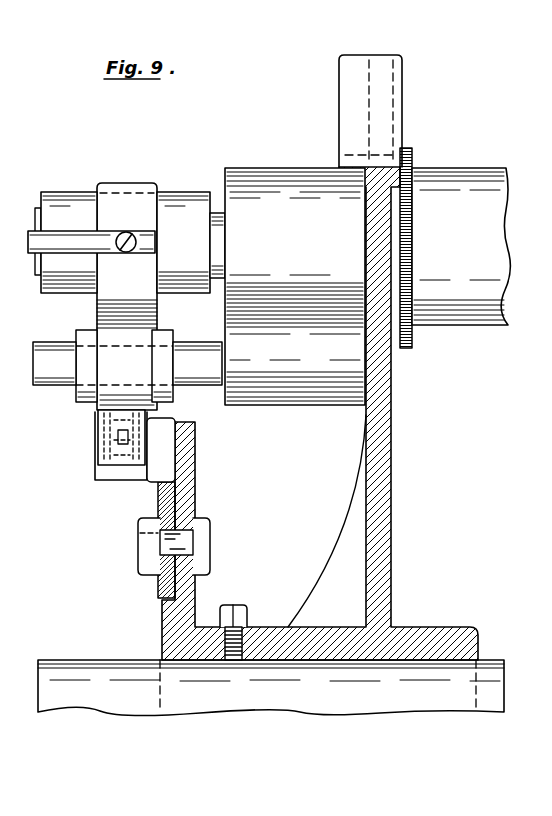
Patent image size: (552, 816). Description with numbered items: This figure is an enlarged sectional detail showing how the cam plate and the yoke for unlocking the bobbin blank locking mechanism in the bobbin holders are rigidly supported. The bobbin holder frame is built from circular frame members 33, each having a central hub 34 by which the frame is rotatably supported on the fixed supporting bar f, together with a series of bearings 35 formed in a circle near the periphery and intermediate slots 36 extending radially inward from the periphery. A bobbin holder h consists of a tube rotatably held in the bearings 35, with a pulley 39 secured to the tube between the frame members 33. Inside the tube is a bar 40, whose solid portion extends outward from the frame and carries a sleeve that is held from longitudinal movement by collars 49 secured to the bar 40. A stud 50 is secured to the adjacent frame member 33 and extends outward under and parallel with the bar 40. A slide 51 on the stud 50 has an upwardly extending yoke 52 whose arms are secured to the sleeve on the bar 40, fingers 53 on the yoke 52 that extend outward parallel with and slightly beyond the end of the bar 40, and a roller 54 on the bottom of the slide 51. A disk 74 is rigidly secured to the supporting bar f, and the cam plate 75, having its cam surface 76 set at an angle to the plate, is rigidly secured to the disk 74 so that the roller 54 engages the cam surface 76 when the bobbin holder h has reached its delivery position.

The circular frame member 33 is at (388, 457).
The central hub 34 is at (432, 621).
The bearing 35 is at (283, 178).
The intermediate slot 36 is at (350, 92).
The pulley 39 is at (465, 181).
The bar 40 is at (217, 213).
The collar 49 is at (68, 197).
The stud 50 is at (46, 352).
The slide 51 is at (90, 382).
The yoke 52 is at (127, 191).
The finger 53 is at (30, 241).
The roller 54 is at (102, 440).
The disk 74 is at (195, 498).
The cam plate 75 is at (153, 486).
The cam surface 76 is at (100, 476).
The bobbin holder h is at (485, 327).
The fixed supporting bar f is at (95, 666).